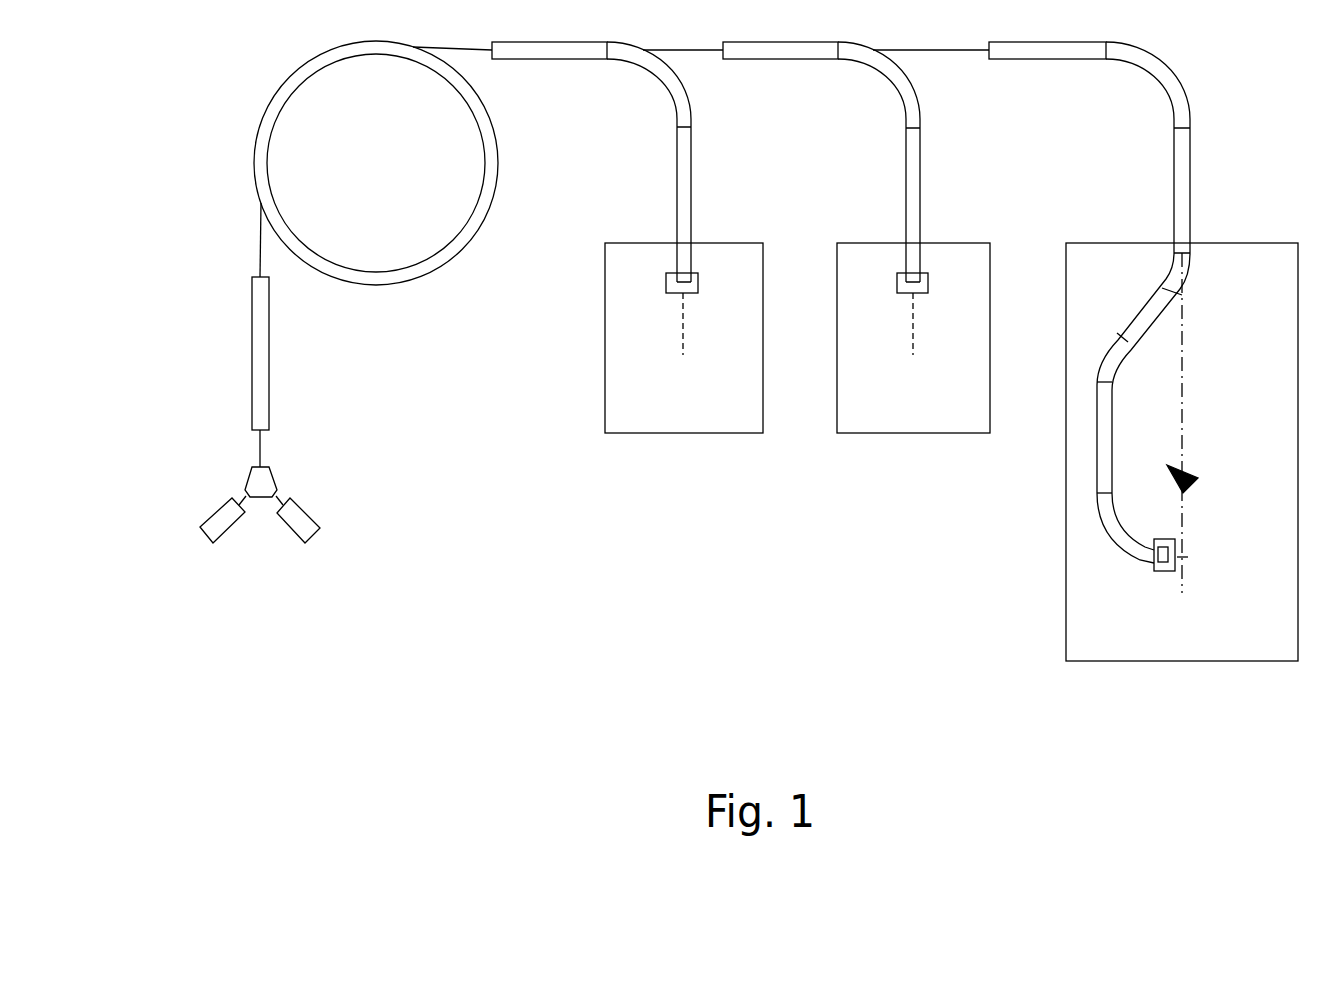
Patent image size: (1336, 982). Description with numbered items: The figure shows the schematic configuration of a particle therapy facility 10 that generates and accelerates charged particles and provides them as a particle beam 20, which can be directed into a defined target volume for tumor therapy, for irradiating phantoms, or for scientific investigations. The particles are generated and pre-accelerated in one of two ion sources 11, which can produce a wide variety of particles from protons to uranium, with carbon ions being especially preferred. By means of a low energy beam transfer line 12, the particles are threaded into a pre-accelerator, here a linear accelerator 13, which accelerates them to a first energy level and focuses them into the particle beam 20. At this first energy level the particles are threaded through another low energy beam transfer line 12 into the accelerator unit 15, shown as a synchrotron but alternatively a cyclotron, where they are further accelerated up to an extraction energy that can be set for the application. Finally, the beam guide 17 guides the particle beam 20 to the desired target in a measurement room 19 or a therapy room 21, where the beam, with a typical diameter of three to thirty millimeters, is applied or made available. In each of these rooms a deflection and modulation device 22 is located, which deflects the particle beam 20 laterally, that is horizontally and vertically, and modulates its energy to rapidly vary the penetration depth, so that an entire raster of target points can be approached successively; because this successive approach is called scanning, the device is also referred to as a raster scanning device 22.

The particle therapy facility 10 is at (483, 677).
The ion sources 11 is at (222, 527).
The low energy beam transfer line 12 is at (267, 483).
The linear accelerator 13 is at (260, 377).
The accelerator unit 15 is at (455, 260).
The beam guide 17 is at (577, 50).
The measurement room 19 is at (652, 433).
The particle beam 20 is at (683, 327).
The therapy room 21 is at (1190, 485).
The deflection and modulation device 22 is at (697, 273).